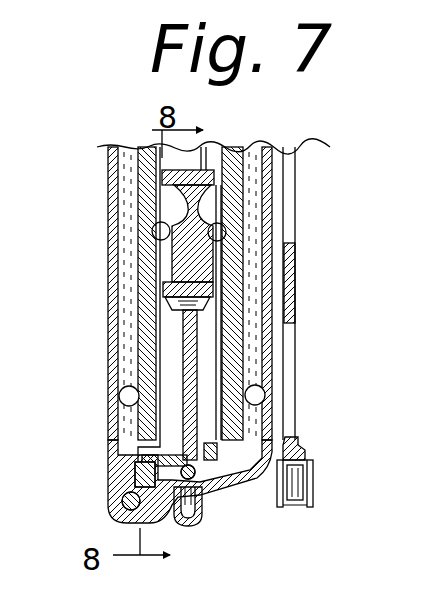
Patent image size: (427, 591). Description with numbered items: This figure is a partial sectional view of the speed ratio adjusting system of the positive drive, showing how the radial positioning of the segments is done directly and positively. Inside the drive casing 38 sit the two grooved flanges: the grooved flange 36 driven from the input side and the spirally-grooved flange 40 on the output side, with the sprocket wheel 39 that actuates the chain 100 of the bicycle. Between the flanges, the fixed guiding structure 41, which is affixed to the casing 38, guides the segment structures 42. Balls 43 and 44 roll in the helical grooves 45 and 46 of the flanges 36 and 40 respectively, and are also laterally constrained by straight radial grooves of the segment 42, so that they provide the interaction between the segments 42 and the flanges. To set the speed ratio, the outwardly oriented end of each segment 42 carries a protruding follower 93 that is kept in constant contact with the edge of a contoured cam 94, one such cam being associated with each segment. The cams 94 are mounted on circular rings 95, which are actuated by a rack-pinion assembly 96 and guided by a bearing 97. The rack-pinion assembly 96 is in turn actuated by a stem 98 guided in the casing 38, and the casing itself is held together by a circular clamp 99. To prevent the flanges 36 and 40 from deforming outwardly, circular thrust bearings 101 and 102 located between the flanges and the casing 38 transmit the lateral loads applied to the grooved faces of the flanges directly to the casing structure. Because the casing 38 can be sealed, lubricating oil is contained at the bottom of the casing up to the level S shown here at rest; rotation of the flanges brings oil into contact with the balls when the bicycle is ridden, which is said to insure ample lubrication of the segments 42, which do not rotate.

The grooved flange 36 is at (200, 176).
The drive casing 38 is at (108, 262).
The sprocket wheel 39 is at (297, 305).
The spirally-grooved flange 40 is at (262, 431).
The fixed guiding structure 41 is at (204, 150).
The segment structure 42 is at (165, 206).
The ball 43 is at (152, 231).
The ball 44 is at (226, 233).
The helical groove 45 is at (168, 305).
The helical groove 46 is at (222, 152).
The protruding follower 93 is at (163, 290).
The contoured cam 94 is at (183, 335).
The circular ring 95 is at (142, 458).
The rack-pinion assembly 96 is at (135, 472).
The bearing 97 is at (226, 476).
The stem 98 is at (122, 501).
The circular clamp 99 is at (180, 512).
The chain 100 is at (313, 500).
The circular thrust bearing 101 is at (119, 396).
The circular thrust bearing 102 is at (265, 395).
The oil level S is at (162, 188).